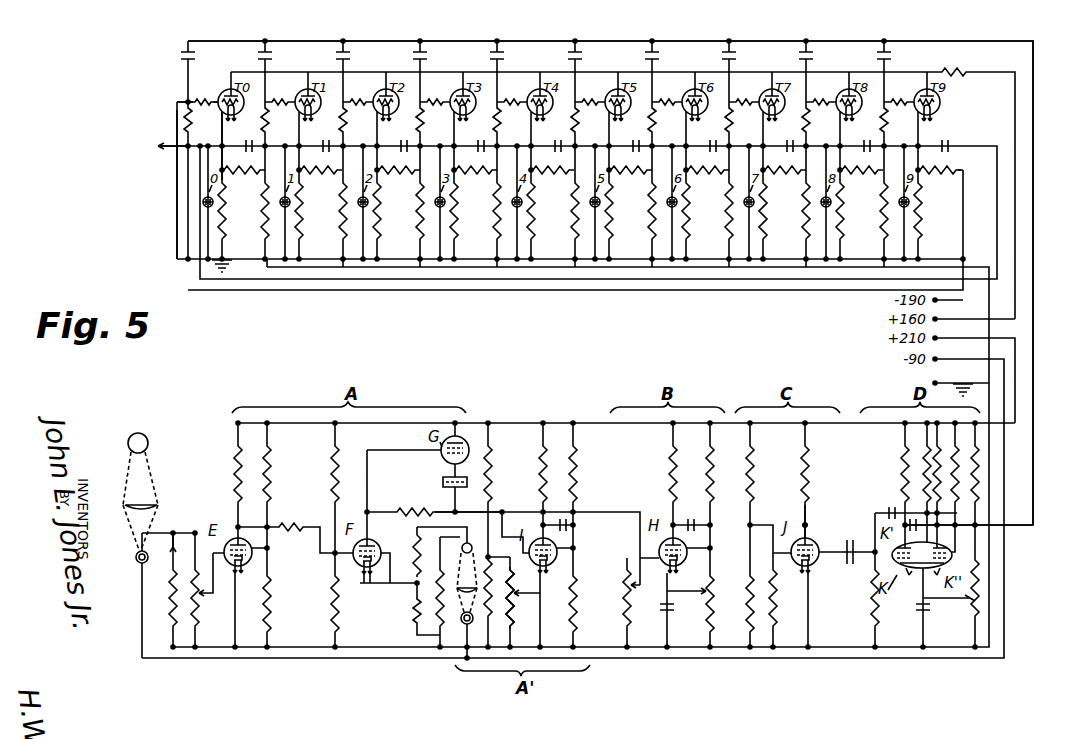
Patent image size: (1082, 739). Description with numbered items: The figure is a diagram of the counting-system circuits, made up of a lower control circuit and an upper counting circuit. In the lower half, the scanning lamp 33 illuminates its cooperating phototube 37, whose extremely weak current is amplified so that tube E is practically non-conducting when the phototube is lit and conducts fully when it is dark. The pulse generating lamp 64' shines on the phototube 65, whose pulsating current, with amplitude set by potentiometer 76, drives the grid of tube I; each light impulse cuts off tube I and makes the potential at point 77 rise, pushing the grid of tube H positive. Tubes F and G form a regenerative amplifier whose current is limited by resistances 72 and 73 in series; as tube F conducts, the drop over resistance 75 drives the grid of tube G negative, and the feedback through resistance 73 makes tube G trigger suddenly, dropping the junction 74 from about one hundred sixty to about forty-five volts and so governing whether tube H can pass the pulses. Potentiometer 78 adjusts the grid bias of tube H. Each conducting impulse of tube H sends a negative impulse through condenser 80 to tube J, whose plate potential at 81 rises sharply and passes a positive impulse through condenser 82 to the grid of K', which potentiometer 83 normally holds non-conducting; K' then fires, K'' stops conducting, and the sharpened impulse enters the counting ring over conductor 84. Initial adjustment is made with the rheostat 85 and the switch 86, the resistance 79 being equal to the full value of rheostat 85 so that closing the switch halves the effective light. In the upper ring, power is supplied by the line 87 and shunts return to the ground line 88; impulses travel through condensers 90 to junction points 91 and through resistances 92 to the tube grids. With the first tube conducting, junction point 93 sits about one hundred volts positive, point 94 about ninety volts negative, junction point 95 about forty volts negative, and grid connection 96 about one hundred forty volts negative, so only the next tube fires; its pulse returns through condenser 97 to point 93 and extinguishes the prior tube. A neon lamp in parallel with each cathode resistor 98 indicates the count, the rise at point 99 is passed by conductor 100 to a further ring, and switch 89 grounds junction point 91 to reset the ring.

The condenser 90 is at (534, 47).
The junction point 91 is at (176, 101).
The resistance 92 is at (205, 100).
The junction point 93 is at (238, 152).
The point 94 is at (256, 173).
The junction point 95 is at (315, 152).
The grid connection 96 is at (334, 173).
The condenser 97 is at (270, 133).
The cathode resistor 98 is at (570, 211).
The point 99 is at (221, 145).
The conductor 100 is at (156, 148).
The switch 89 is at (172, 166).
The ground line 88 is at (469, 259).
The power line 87 is at (1014, 101).
The conductor 84 is at (625, 271).
The scanning lamp 33 is at (148, 445).
The phototube 37 is at (135, 557).
The resistance 79 is at (171, 605).
The rheostat 85 is at (197, 600).
The switch 86 is at (172, 550).
The resistance 72 is at (418, 504).
The resistance 73 is at (414, 606).
The junction 74 is at (456, 509).
The resistance 75 is at (410, 509).
The potentiometer 76 is at (512, 614).
The point 77 is at (543, 526).
The potentiometer 78 is at (701, 602).
The condenser 80 is at (691, 521).
The plate potential point 81 is at (806, 524).
The condenser 82 is at (856, 534).
The potentiometer 83 is at (960, 612).
The pulse generating lamp 64' is at (480, 572).
The phototube 65 is at (462, 623).